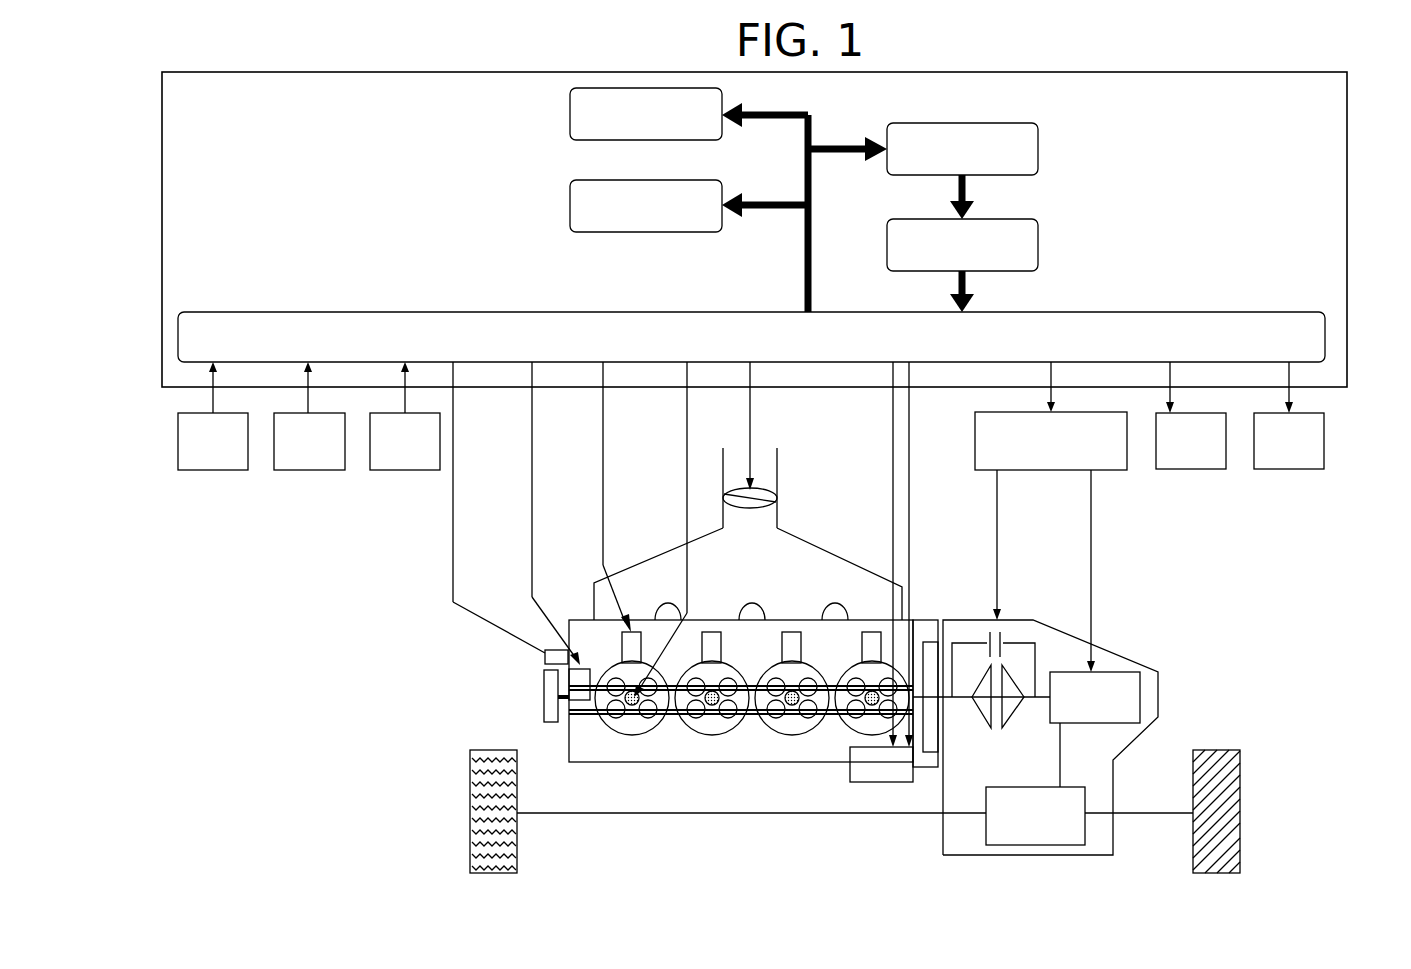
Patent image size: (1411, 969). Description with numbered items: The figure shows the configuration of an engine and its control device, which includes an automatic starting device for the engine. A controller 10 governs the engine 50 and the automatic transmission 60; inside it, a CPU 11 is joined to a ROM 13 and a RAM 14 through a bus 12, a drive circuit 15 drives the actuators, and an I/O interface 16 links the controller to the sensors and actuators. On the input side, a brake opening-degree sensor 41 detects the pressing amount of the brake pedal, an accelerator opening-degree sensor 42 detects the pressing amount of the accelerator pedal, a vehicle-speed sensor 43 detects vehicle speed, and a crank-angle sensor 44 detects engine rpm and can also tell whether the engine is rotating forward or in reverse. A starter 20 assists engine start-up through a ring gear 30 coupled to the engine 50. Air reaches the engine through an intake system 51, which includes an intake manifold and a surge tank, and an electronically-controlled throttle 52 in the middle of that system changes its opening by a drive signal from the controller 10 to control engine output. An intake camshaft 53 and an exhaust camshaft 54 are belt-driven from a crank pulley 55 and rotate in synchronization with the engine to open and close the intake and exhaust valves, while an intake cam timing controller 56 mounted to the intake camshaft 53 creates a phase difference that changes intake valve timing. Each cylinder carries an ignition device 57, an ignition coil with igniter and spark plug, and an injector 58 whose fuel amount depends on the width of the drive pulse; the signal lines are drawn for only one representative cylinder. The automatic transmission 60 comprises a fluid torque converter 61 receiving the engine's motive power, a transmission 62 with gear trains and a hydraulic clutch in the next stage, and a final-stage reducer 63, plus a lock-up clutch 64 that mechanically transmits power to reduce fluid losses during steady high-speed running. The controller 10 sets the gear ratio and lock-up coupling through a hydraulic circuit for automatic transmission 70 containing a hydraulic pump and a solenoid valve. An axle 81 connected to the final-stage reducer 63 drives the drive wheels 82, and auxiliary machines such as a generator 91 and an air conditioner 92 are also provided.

The controller 10 is at (1338, 388).
The CPU 11 is at (1038, 148).
The bus 12 is at (812, 122).
The ROM 13 is at (570, 120).
The RAM 14 is at (570, 205).
The drive circuit 15 is at (1038, 247).
The I/O interface 16 is at (1210, 312).
The starter 20 is at (850, 774).
The ring gear 30 is at (927, 645).
The brake opening-degree sensor 41 is at (212, 470).
The accelerator opening-degree sensor 42 is at (304, 470).
The vehicle-speed sensor 43 is at (392, 470).
The crank-angle sensor 44 is at (547, 650).
The engine 50 is at (736, 762).
The intake system 51 is at (835, 556).
The electronically-controlled throttle 52 is at (777, 491).
The intake camshaft 53 is at (746, 678).
The exhaust camshaft 54 is at (672, 720).
The crank pulley 55 is at (544, 711).
The intake cam timing controller 56 is at (580, 685).
The ignition device 57 is at (633, 706).
The injector 58 is at (622, 648).
The automatic transmission 60 is at (943, 846).
The fluid torque converter 61 is at (999, 732).
The transmission 62 is at (1120, 672).
The final-stage reducer 63 is at (1085, 830).
The lock-up clutch 64 is at (1012, 630).
The hydraulic circuit for automatic transmission 70 is at (1105, 470).
The axle 81 is at (760, 814).
The drive wheels 82 is at (470, 805).
The generator 91 is at (1185, 470).
The air conditioner 92 is at (1284, 470).